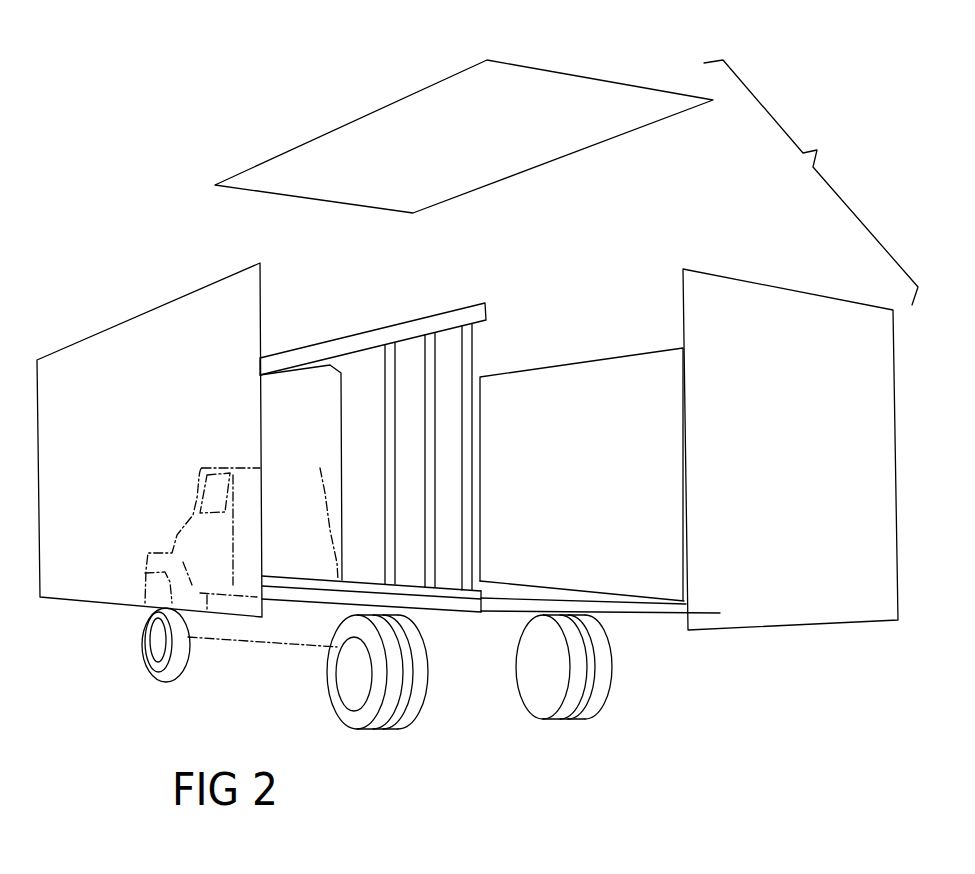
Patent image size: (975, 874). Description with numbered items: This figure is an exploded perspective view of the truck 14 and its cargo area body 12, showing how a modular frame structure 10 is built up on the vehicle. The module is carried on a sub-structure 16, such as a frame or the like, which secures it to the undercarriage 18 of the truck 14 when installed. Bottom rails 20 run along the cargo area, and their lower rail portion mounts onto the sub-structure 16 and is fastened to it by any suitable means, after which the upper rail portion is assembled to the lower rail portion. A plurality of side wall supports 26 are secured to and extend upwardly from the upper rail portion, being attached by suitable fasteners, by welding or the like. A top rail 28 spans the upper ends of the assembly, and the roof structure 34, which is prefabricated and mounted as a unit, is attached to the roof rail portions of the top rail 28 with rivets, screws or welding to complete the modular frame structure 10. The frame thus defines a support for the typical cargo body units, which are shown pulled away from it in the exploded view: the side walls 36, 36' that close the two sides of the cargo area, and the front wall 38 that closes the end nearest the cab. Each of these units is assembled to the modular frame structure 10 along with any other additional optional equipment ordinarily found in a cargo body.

The modular frame structure 10 is at (425, 407).
The cargo area body 12 is at (137, 333).
The truck 14 is at (328, 604).
The sub-structure 16 is at (463, 614).
The undercarriage 18 is at (236, 642).
The bottom rails 20 is at (313, 583).
The side wall supports 26 is at (473, 343).
The top rail 28 is at (453, 305).
The roof structure 34 is at (580, 76).
The side wall 36 is at (136, 438).
The side wall 36' is at (586, 444).
The front wall 38 is at (331, 367).